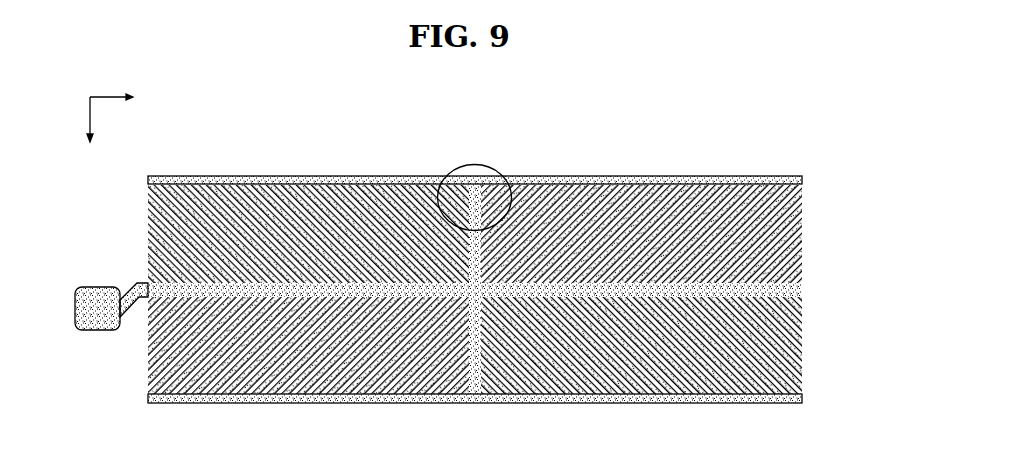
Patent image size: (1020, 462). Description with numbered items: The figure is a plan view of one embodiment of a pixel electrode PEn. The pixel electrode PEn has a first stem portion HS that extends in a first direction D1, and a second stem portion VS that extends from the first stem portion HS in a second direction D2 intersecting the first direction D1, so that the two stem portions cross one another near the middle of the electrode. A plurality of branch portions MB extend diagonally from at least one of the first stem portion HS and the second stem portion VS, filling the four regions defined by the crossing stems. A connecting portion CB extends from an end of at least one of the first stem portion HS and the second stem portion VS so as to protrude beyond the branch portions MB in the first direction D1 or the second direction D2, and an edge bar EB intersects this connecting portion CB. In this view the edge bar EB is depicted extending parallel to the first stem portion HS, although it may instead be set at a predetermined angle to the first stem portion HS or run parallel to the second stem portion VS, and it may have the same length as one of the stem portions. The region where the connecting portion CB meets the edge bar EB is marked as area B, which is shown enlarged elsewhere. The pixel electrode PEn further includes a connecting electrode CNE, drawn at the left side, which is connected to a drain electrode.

The pixel electrode PEn is at (223, 141).
The edge bar EB is at (726, 177).
The branch portions MB is at (665, 186).
The first stem portion HS is at (802, 288).
The second stem portion VS is at (477, 394).
The connecting portion CB is at (478, 185).
The area B is at (468, 162).
The connecting electrode CNE is at (97, 287).
The first direction D1 is at (124, 98).
The second direction D2 is at (89, 131).